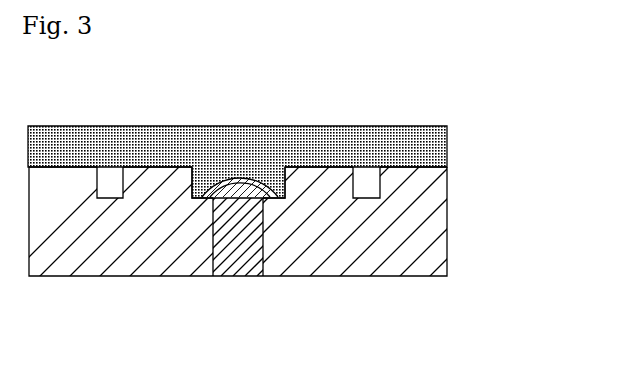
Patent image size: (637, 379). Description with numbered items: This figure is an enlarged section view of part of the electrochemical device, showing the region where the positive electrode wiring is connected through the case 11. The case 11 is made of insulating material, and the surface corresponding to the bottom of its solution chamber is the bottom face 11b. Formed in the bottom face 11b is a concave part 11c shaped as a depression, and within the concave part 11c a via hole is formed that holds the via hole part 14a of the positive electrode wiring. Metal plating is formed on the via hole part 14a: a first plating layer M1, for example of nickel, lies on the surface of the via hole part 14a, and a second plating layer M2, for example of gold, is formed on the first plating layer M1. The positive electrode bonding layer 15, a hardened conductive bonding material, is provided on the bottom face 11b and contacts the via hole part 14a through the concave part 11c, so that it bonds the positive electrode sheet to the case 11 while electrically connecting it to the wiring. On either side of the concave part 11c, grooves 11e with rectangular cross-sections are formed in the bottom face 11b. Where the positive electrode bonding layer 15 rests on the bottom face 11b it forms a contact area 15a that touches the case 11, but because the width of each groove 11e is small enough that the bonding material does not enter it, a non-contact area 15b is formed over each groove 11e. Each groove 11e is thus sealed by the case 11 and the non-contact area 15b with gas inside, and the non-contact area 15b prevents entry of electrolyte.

The case 11 is at (438, 216).
The bottom face 11b is at (428, 174).
The concave part 11c is at (289, 190).
The groove 11e is at (110, 193).
The via hole part 14a is at (243, 277).
The positive electrode bonding layer 15 is at (447, 134).
The contact area 15a is at (60, 160).
The non-contact area 15b is at (107, 160).
The first plating layer M1 is at (229, 177).
The second plating layer M2 is at (246, 182).